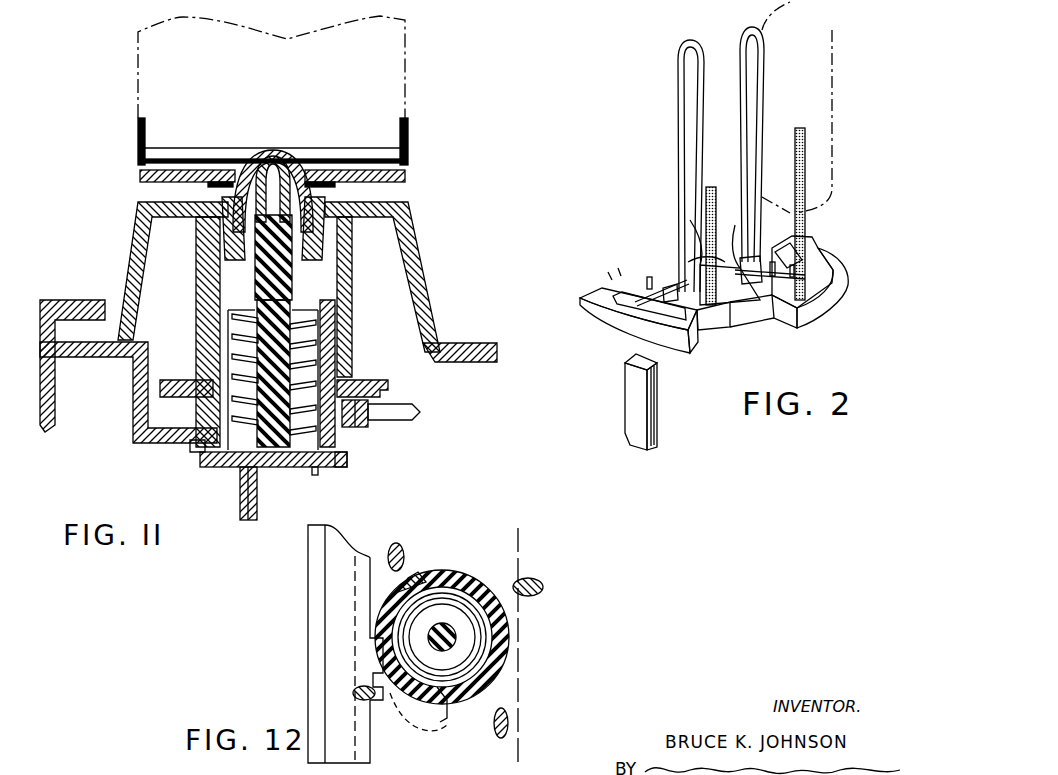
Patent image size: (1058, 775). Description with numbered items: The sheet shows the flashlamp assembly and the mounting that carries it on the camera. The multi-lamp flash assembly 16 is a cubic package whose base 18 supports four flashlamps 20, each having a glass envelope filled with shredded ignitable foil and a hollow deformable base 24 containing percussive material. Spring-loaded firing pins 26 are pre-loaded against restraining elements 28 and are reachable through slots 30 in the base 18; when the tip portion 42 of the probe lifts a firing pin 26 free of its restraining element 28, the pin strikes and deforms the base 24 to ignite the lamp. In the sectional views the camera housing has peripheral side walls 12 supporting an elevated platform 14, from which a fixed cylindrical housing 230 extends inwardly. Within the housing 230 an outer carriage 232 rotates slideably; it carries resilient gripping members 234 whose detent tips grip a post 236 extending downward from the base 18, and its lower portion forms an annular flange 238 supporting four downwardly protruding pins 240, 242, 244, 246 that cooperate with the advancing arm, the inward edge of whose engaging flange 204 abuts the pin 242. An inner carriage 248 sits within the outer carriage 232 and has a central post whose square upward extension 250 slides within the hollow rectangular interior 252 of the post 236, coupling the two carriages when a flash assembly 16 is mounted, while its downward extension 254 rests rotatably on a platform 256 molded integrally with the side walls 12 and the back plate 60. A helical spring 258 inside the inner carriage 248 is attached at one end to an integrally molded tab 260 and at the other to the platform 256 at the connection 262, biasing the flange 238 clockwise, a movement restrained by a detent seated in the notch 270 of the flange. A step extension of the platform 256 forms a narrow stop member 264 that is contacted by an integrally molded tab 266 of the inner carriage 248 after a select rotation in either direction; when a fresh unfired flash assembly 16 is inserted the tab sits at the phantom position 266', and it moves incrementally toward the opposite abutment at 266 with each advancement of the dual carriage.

In FIG. 11, the peripheral side walls 12 is at (70, 300).
In FIG. 11, the elevated platform 14 is at (125, 250).
In FIG. 11, the multi-lamp flash assembly 16 is at (405, 62).
In FIG. 2, the multi-lamp flash assembly 16 is at (668, 141).
In FIG. 2, the base 18 is at (830, 300).
In FIG. 2, the flashlamps 20 is at (828, 15).
In FIG. 2, the deformable base 24 is at (712, 186).
In FIG. 2, the firing pins 26 is at (679, 60).
In FIG. 2, the restraining elements 28 is at (650, 278).
In FIG. 2, the slots 30 is at (606, 292).
In FIG. 2, the tip portion 42 is at (660, 385).
In FIG. 11, the back plate 60 is at (240, 480).
In FIG. 11, the engaging flange 204 is at (420, 412).
In FIG. 11, the fixed cylindrical housing 230 is at (200, 255).
In FIG. 11, the outer carriage 232 is at (352, 315).
In FIG. 11, the resilient gripping members 234 is at (235, 212).
In FIG. 11, the post 236 is at (236, 178).
In FIG. 11, the annular flange 238 is at (353, 375).
In FIG. 12, the pin 240 is at (508, 716).
In FIG. 11, the pin 242 is at (362, 410).
In FIG. 12, the pin 242 is at (353, 694).
In FIG. 12, the pin 244 is at (404, 545).
In FIG. 12, the pin 246 is at (540, 580).
In FIG. 11, the inner carriage 248 is at (330, 432).
In FIG. 12, the inner carriage 248 is at (505, 645).
In FIG. 11, the upward extension 250 is at (272, 262).
In FIG. 11, the hollow rectangular interior 252 is at (276, 168).
In FIG. 11, the downward post extension 254 is at (273, 493).
In FIG. 12, the downward post extension 254 is at (448, 628).
In FIG. 11, the platform 256 is at (338, 464).
In FIG. 11, the helical spring 258 is at (310, 405).
In FIG. 12, the helical spring 258 is at (450, 600).
In FIG. 11, the tab 260 is at (240, 316).
In FIG. 11, the spring connection 262 is at (314, 474).
In FIG. 11, the stop member 264 is at (195, 442).
In FIG. 12, the stop member 264 is at (383, 648).
In FIG. 12, the tab 266 is at (433, 567).
In FIG. 12, the tab alternate position 266' is at (437, 721).
In FIG. 11, the notch 270 is at (382, 380).